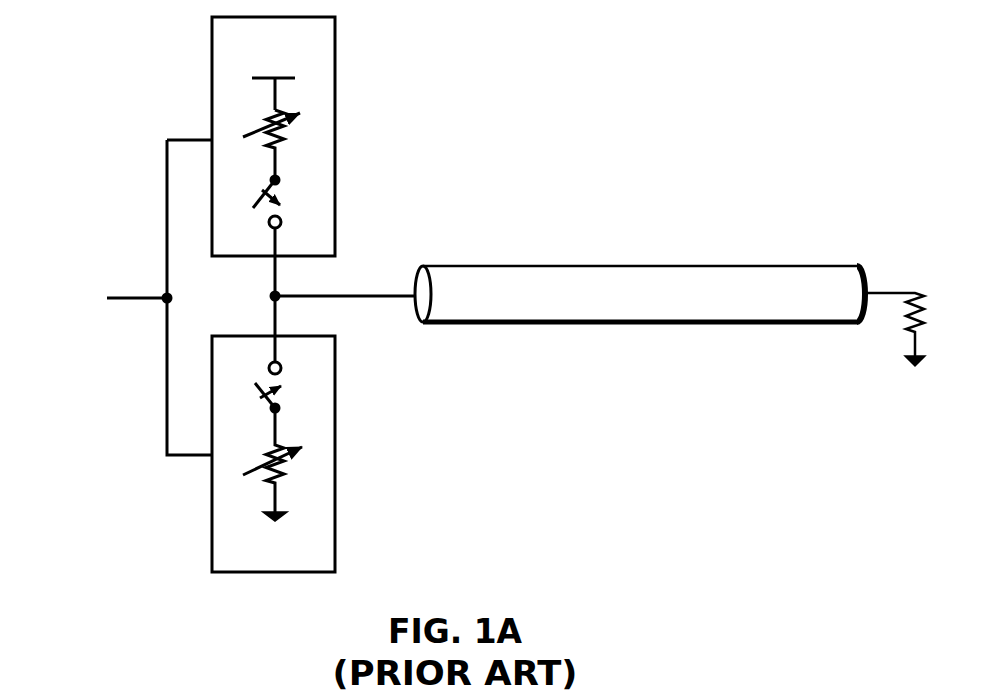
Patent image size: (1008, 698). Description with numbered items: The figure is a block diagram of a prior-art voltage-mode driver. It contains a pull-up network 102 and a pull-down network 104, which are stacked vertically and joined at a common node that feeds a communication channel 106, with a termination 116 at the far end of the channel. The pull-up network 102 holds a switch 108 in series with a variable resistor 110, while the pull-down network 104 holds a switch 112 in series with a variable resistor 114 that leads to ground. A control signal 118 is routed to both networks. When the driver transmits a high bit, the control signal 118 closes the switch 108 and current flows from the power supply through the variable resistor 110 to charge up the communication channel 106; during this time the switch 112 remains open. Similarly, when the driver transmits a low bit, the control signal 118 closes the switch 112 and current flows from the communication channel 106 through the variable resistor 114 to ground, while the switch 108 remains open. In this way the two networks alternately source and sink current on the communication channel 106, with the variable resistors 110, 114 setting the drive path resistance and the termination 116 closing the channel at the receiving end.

The pull-up network 102 is at (401, 136).
The pull-down network 104 is at (402, 454).
The communication channel 106 is at (640, 294).
The switch 108 is at (305, 207).
The variable resistor 110 is at (303, 127).
The switch 112 is at (300, 402).
The variable resistor 114 is at (300, 473).
The termination 116 is at (905, 318).
The control signal 118 is at (107, 297).